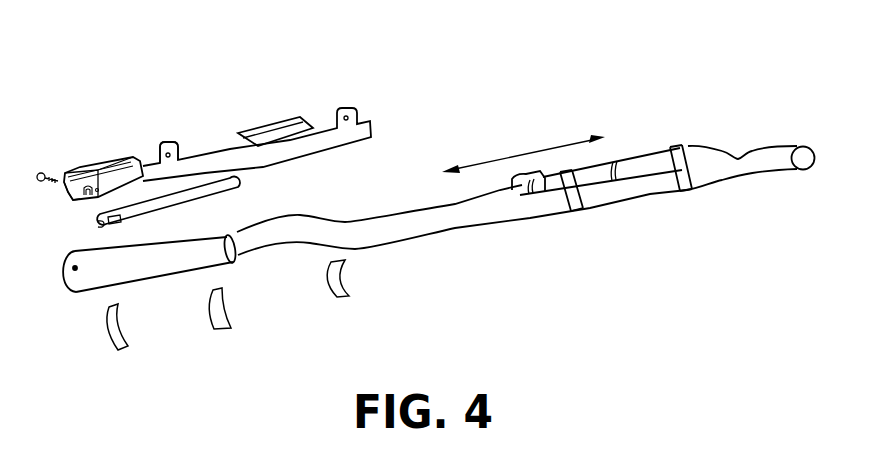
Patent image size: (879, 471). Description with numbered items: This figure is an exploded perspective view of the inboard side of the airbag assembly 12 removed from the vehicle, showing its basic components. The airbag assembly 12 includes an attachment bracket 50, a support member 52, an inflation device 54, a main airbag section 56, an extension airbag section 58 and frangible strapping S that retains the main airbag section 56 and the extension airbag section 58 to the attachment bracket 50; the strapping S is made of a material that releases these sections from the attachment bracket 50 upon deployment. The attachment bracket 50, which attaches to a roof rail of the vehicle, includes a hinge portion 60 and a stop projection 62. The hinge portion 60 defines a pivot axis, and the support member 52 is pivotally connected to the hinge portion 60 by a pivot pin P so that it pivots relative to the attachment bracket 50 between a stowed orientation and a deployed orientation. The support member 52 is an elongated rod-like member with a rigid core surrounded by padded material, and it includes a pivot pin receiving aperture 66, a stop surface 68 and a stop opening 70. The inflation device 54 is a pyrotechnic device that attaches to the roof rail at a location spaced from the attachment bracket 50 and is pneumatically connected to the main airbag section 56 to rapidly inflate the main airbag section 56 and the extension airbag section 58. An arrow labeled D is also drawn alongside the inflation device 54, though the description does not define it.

The airbag assembly 12 is at (284, 90).
The attachment bracket 50 is at (197, 163).
The support member 52 is at (197, 197).
The inflation device 54 is at (638, 162).
The main airbag section 56 is at (352, 228).
The extension airbag section 58 is at (185, 263).
The hinge portion 60 is at (91, 178).
The stop projection 62 is at (73, 196).
The pivot pin receiving aperture 66 is at (102, 225).
The stop surface 68 is at (127, 200).
The stop opening 70 is at (121, 219).
The pivot pin P is at (40, 174).
The direction of movement D is at (527, 151).
The frangible strapping S is at (213, 327).